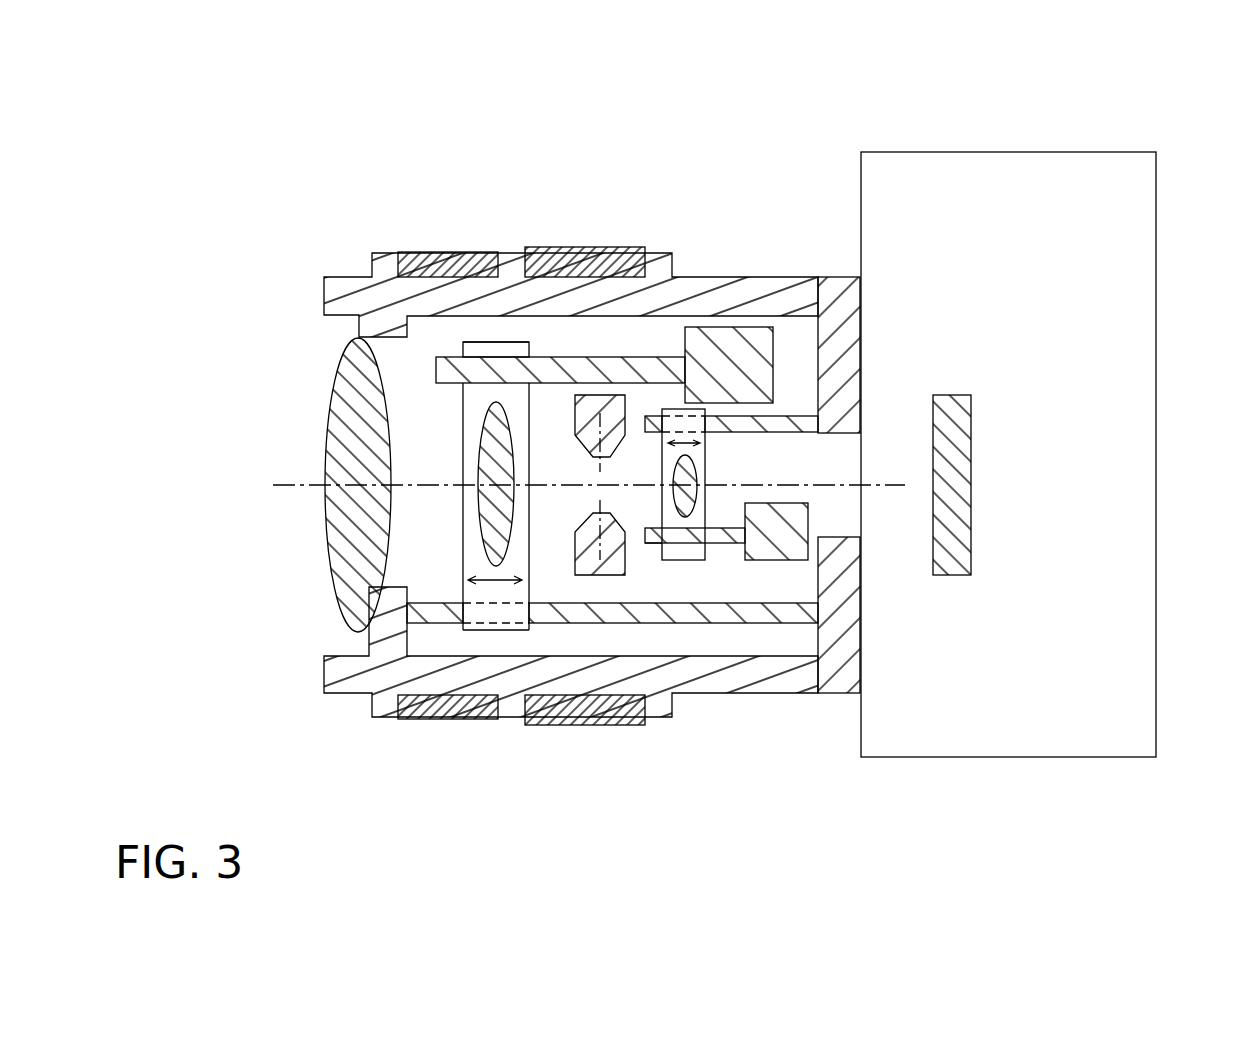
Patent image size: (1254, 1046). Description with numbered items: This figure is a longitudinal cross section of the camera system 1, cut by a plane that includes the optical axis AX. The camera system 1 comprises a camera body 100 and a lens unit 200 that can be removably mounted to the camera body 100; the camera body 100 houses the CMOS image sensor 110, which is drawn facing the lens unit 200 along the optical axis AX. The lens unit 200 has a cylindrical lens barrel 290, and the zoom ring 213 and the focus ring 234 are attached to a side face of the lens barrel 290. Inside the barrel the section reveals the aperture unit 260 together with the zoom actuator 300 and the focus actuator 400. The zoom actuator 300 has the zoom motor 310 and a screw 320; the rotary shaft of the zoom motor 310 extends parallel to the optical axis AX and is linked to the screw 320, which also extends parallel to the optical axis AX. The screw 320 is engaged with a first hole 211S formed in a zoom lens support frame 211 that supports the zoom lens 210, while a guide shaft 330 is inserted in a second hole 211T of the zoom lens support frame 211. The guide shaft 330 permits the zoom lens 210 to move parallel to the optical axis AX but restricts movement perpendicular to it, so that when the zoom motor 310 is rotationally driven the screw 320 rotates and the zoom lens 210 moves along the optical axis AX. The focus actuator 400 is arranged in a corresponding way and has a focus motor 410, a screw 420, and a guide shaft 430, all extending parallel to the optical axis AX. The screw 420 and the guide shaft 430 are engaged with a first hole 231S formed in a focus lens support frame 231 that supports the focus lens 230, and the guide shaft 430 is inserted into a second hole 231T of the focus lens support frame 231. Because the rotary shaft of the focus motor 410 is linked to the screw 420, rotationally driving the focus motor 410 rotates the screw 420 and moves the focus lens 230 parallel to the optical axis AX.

The camera system 1 is at (351, 125).
The camera body 100 is at (896, 140).
The CMOS image sensor 110 is at (955, 438).
The lens unit 200 is at (248, 290).
The zoom lens 210 is at (480, 432).
The zoom lens support frame 211 is at (473, 345).
The first hole 211S is at (452, 344).
The second hole 211T is at (450, 589).
The zoom ring 213 is at (590, 256).
The focus lens 230 is at (672, 480).
The focus lens support frame 231 is at (720, 557).
The first hole 231S is at (646, 558).
The second hole 231T is at (715, 445).
The focus ring 234 is at (425, 263).
The aperture unit 260 is at (588, 562).
The lens barrel 290 is at (352, 295).
The zoom actuator 300 is at (760, 170).
The zoom motor 310 is at (715, 367).
The screw 320 is at (642, 367).
The guide shaft 330 is at (440, 608).
The focus actuator 400 is at (823, 780).
The focus motor 410 is at (773, 540).
The screw 420 is at (737, 545).
The guide shaft 430 is at (787, 420).
The optical axis AX is at (566, 478).